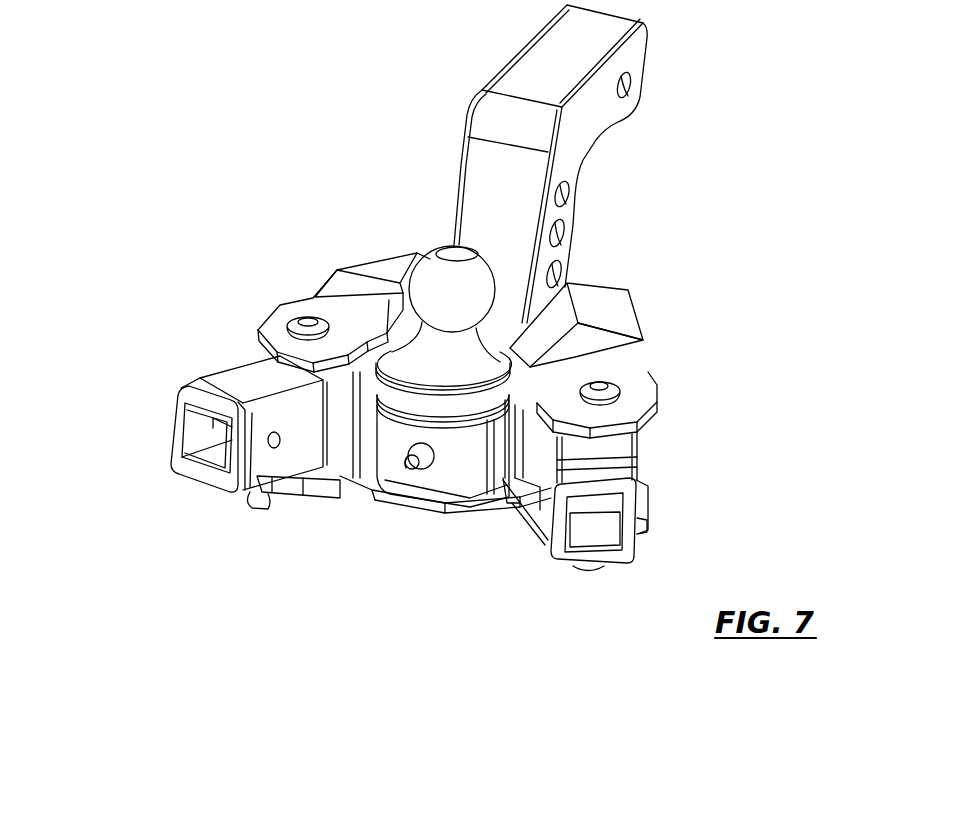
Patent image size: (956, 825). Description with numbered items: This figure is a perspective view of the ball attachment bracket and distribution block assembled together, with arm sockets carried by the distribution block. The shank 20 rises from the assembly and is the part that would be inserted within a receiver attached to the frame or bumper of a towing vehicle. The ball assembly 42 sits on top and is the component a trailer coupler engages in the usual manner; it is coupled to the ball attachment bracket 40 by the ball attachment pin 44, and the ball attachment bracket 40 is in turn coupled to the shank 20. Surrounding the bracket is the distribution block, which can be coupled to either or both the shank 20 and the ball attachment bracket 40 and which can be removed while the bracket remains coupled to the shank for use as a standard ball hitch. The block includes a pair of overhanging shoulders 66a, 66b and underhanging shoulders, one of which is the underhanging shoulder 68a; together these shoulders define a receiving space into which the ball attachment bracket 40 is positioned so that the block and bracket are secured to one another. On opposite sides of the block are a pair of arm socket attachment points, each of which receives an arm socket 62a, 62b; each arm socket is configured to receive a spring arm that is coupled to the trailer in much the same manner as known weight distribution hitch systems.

The shank 20 is at (614, 113).
The ball attachment bracket 40 is at (465, 463).
The ball assembly 42 is at (428, 362).
The ball attachment pin 44 is at (413, 467).
The arm socket 62a is at (233, 385).
The arm socket 62b is at (610, 479).
The overhanging shoulder 66a is at (505, 376).
The overhanging shoulder 66b is at (382, 340).
The underhanging shoulder 68a is at (480, 508).